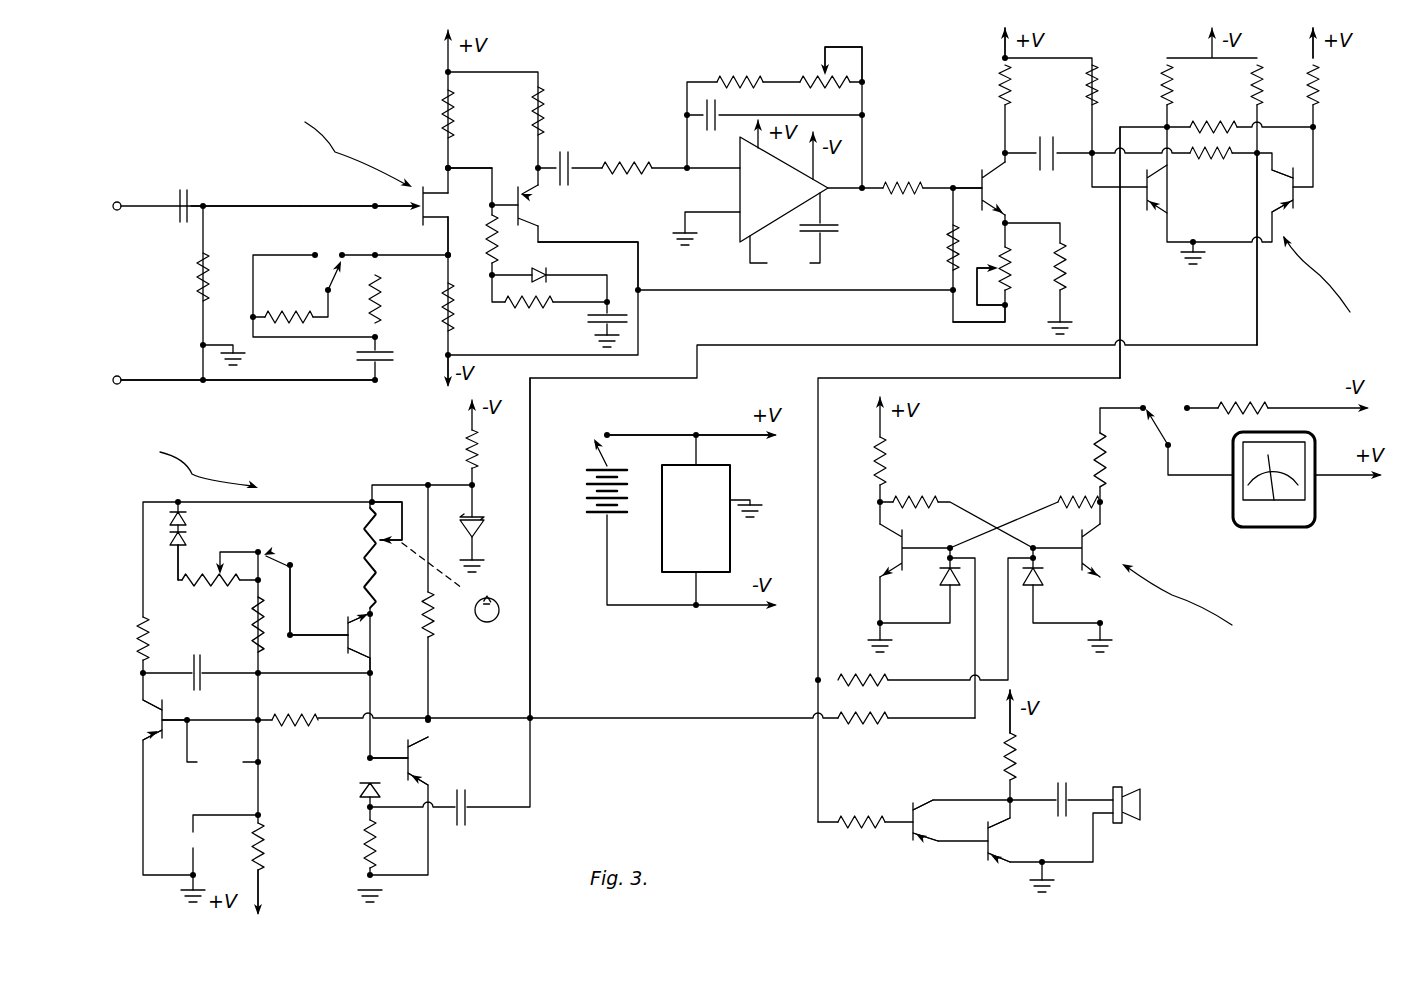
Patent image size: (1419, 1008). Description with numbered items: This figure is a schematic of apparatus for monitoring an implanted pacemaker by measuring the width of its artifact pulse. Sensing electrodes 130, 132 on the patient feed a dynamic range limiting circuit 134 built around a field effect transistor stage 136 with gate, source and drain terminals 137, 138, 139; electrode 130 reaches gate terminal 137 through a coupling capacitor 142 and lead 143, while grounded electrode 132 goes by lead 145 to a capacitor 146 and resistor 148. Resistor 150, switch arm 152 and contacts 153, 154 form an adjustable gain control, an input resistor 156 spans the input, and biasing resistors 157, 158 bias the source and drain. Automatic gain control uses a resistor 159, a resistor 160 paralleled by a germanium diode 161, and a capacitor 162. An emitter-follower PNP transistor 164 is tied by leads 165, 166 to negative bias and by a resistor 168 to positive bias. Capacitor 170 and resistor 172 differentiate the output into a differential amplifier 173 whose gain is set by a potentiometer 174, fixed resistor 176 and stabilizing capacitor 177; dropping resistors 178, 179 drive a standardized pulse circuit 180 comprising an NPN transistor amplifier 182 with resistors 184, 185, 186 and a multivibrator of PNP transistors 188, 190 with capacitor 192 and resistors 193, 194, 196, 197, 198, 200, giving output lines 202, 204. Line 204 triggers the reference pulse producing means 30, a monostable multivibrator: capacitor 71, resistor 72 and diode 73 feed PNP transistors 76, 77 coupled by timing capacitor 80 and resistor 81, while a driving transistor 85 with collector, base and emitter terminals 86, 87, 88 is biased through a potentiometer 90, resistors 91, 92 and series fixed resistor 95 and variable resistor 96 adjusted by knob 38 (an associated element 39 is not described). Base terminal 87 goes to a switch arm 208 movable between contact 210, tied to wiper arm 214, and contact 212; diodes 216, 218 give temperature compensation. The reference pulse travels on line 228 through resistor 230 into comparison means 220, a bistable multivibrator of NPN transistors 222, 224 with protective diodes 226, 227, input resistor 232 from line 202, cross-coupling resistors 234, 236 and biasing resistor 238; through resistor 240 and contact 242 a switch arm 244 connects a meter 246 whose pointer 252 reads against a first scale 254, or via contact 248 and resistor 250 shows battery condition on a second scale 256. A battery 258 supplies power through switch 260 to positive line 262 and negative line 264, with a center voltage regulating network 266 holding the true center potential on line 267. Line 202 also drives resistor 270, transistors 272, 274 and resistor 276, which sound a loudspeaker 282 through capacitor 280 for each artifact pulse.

The sensing electrode 130 is at (130, 186).
The sensing electrode 132 is at (117, 376).
The dynamic range limiting circuit 134 is at (331, 145).
The field effect transistor stage 136 is at (412, 186).
The gate terminal 137 is at (350, 197).
The source terminal 138 is at (444, 256).
The drain terminal 139 is at (441, 166).
The coupling capacitor 142 is at (188, 180).
The lead 143 is at (258, 186).
The lead 145 is at (262, 394).
The capacitor 146 is at (391, 377).
The resistor 148 is at (440, 296).
The resistor 150 is at (311, 308).
The switch arm 152 is at (316, 250).
The switch contact 153 is at (290, 248).
The switch contact 154 is at (342, 255).
The input resistor 156 is at (187, 288).
The biasing resistor 157 is at (400, 297).
The biasing resistor 158 is at (426, 118).
The resistor 159 is at (492, 264).
The resistor 160 is at (508, 312).
The germanium diode 161 is at (552, 272).
The capacitor 162 is at (569, 312).
The PNP transistor 164 is at (511, 188).
The lead 165 is at (630, 238).
The negative bias voltage line 166 is at (650, 312).
The resistor 168 is at (549, 94).
The capacitor 170 is at (565, 144).
The resistor 172 is at (645, 162).
The differential amplifier 173 is at (758, 186).
The potentiometer 174 is at (801, 76).
The fixed resistor 176 is at (722, 76).
The capacitor 177 is at (715, 96).
The voltage dropping resistor 178 is at (922, 160).
The voltage dropping resistor 179 is at (946, 256).
The standardized pulse producing circuit 180 is at (1334, 280).
The NPN transistor amplifier 182 is at (978, 154).
The biasing resistor 184 is at (992, 88).
The potentiometer 185 is at (1014, 270).
The fixed resistor 186 is at (1077, 264).
The PNP transistor 188 is at (1168, 205).
The PNP transistor 190 is at (1310, 200).
The capacitor 192 is at (1046, 177).
The resistor 193 is at (1210, 160).
The resistor 194 is at (1098, 88).
The resistor 196 is at (1162, 82).
The resistor 197 is at (1252, 84).
The resistor 198 is at (1325, 78).
The resistor 200 is at (1234, 116).
The output line 202 is at (1129, 312).
The output line 204 is at (1241, 309).
The reference pulse producing means 30 is at (188, 463).
The knob 38 is at (492, 632).
The light beam 39 is at (462, 588).
The capacitor 71 is at (464, 828).
The resistor 72 is at (364, 854).
The diode 73 is at (358, 786).
The first switching transistor 76 is at (145, 712).
The second switching transistor 77 is at (433, 762).
The capacitor 80 is at (196, 708).
The resistor 81 is at (282, 726).
The transistor 85 is at (359, 626).
The collector terminal 86 is at (370, 660).
The base terminal 87 is at (286, 644).
The emitter terminal 88 is at (415, 614).
The potentiometer 90 is at (174, 582).
The resistor 91 is at (252, 620).
The resistor 92 is at (273, 842).
The fixed resistor 95 is at (360, 594).
The variable resistor 96 is at (368, 524).
The switch arm 208 is at (277, 560).
The contact 210 is at (258, 562).
The contact 212 is at (240, 578).
The wiper arm 214 is at (248, 544).
The diode 216 is at (186, 538).
The diode 218 is at (186, 518).
The comparison means 220 is at (1198, 601).
The first switching transistor 222 is at (880, 556).
The second switching transistor 224 is at (1096, 546).
The protective diode 226 is at (944, 587).
The protective diode 227 is at (1060, 596).
The line 228 is at (684, 733).
The resistor 230 is at (882, 714).
The resistor 232 is at (892, 674).
The resistor 234 is at (914, 492).
The resistor 236 is at (1082, 496).
The biasing resistor 238 is at (894, 446).
The resistor 240 is at (1100, 442).
The contact 242 is at (1134, 404).
The switch arm 244 is at (1172, 444).
The meter 246 is at (1274, 538).
The second switch contact 248 is at (1192, 396).
The resistor 250 is at (1272, 396).
The pointer 252 is at (1242, 505).
The first scale 254 is at (1306, 440).
The second scale 256 is at (1310, 486).
The battery 258 is at (589, 512).
The switch 260 is at (592, 452).
The line 262 is at (440, 60).
The line 264 is at (1330, 368).
The center voltage regulating network 266 is at (740, 538).
The line 267 is at (758, 506).
The resistor 270 is at (880, 790).
The transistor 272 is at (909, 846).
The second transistor 274 is at (971, 868).
The resistor 276 is at (997, 753).
The capacitor 280 is at (1075, 762).
The loudspeaker 282 is at (1126, 778).